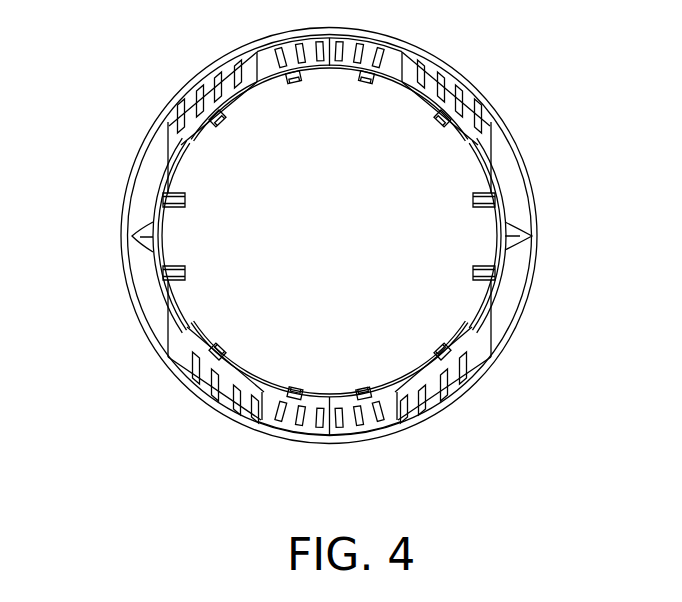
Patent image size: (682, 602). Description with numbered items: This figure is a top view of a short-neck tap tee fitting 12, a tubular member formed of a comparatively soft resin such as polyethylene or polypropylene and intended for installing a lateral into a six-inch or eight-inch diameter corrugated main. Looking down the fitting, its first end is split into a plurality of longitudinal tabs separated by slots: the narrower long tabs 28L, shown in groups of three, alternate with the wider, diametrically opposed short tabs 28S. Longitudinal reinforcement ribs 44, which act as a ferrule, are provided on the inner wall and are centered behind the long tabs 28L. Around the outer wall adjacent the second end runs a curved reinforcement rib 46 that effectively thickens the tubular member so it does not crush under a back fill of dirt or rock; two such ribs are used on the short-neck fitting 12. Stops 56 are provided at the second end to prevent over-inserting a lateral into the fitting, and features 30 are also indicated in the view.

The short-neck tap tee fitting 12 is at (565, 145).
The long tabs 28L is at (437, 403).
The short tabs 28S is at (153, 200).
The locating tabs 30 is at (132, 237).
The longitudinal reinforcement ribs 44 is at (293, 85).
The curved reinforcement rib 46 is at (523, 320).
The stops 56 is at (185, 272).